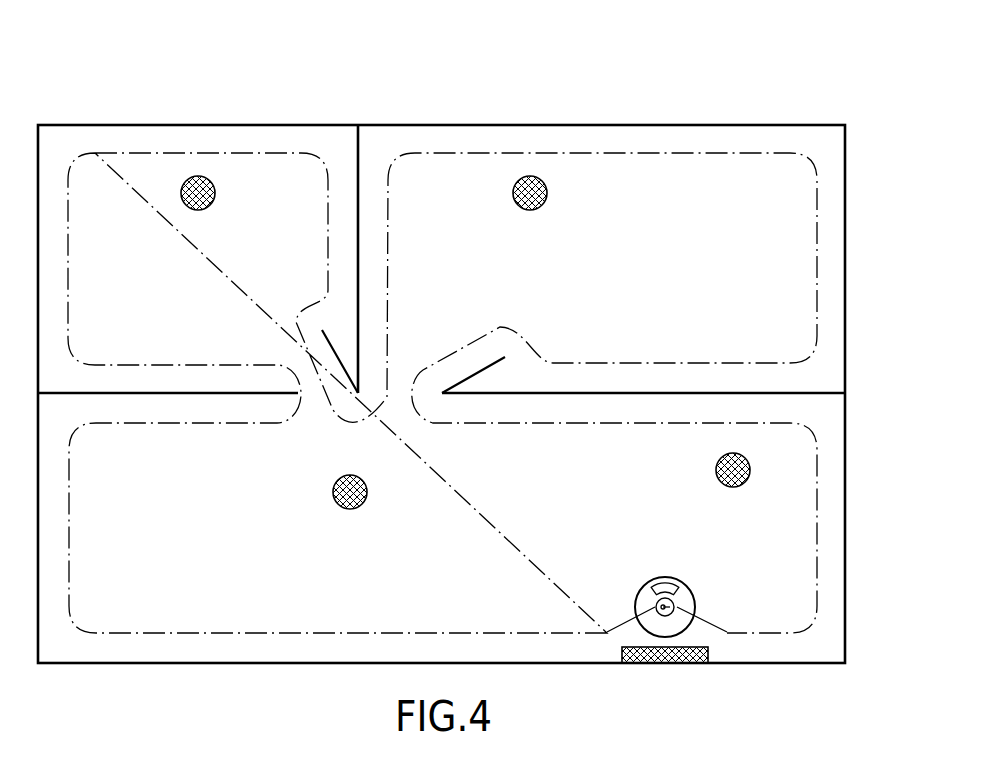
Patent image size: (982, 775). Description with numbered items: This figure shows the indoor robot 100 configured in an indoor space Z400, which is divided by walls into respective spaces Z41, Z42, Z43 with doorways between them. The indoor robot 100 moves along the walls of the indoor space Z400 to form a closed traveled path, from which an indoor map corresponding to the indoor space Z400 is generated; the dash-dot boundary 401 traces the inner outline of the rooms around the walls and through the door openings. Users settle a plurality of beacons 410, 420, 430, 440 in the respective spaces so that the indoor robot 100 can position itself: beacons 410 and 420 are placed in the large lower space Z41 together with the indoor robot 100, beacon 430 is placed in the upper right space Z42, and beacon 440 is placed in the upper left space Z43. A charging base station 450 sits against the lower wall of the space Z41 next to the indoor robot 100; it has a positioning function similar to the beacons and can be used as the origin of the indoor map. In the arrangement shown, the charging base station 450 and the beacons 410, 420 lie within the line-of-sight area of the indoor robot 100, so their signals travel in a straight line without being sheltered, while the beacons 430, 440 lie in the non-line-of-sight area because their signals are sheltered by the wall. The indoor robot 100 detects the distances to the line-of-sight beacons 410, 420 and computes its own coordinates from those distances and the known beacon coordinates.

The indoor space Z400 is at (682, 108).
The cleaning zone boundary 401 is at (815, 573).
The space Z41 is at (478, 543).
The space Z42 is at (640, 273).
The space Z43 is at (225, 273).
The beacon 440 is at (215, 193).
The beacon 430 is at (547, 193).
The beacon 420 is at (333, 492).
The beacon 410 is at (716, 470).
The indoor robot 100 is at (650, 584).
The charging base station 450 is at (638, 650).